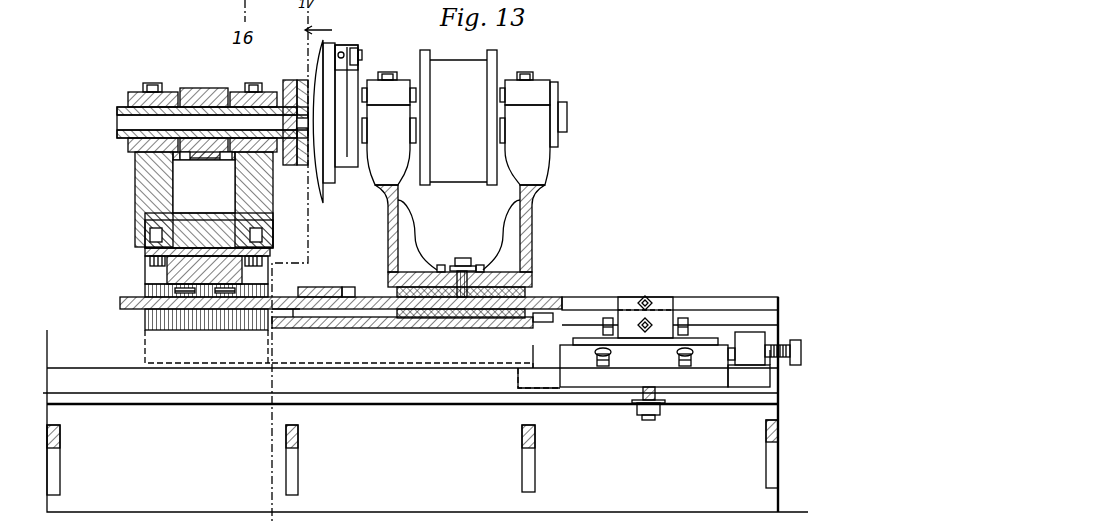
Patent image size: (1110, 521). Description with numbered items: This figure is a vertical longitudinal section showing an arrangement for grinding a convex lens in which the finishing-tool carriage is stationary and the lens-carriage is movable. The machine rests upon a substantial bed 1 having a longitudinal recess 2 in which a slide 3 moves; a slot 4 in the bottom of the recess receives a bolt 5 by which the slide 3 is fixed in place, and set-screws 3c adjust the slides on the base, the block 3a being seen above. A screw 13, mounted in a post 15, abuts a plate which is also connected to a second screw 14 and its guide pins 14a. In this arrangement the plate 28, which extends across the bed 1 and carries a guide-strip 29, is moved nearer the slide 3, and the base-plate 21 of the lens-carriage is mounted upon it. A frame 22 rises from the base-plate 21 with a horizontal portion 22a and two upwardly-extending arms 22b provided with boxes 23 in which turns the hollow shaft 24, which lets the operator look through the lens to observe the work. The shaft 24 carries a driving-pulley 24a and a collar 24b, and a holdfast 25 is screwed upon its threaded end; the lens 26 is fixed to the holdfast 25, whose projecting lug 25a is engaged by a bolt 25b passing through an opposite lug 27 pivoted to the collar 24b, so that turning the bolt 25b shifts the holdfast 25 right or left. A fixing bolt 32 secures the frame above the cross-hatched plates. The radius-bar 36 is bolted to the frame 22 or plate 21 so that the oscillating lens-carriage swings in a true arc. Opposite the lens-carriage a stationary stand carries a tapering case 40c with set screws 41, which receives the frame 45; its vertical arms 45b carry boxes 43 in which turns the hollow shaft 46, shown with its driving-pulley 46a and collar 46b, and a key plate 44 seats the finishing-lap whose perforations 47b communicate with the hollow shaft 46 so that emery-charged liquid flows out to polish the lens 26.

The bed 1 is at (425, 404).
The longitudinal recess 2 is at (70, 381).
The slide 3 is at (714, 378).
The slide block 3a is at (644, 362).
The set-screws 3c is at (597, 352).
The slot 4 is at (393, 397).
The bolt 5 is at (647, 420).
The screw 13 is at (790, 348).
The screw 14 is at (656, 318).
The guide pins 14a is at (662, 299).
The posts 15 is at (746, 348).
The base-plate 21 is at (447, 318).
The frame 22 is at (533, 283).
The horizontal portion 22a is at (445, 263).
The arms or supports 22b is at (456, 136).
The boxes 23 is at (458, 88).
The hollow shaft 24 is at (568, 126).
The driving-pulley 24a is at (458, 117).
The collar 24b is at (356, 78).
The holdfast 25 is at (347, 160).
The projecting lug 25a is at (340, 45).
The bolt 25b is at (362, 55).
The lens 26 is at (314, 190).
The lug 27 is at (358, 48).
The plate 28 is at (362, 328).
The guide-strip 29 is at (341, 287).
The fixing bolt 32 is at (469, 261).
The radius-bar 36 is at (598, 300).
The case or slide 40c is at (272, 250).
The set screws 41 is at (150, 260).
The boxes 43 is at (147, 280).
The vertical shaft 44 is at (303, 166).
The frame 45 is at (135, 237).
The vertical arms 45b is at (134, 200).
The hollow shaft 46 is at (181, 117).
The driving-pulley 46a is at (213, 84).
The collar 46b is at (290, 88).
The perforations 47b is at (290, 128).